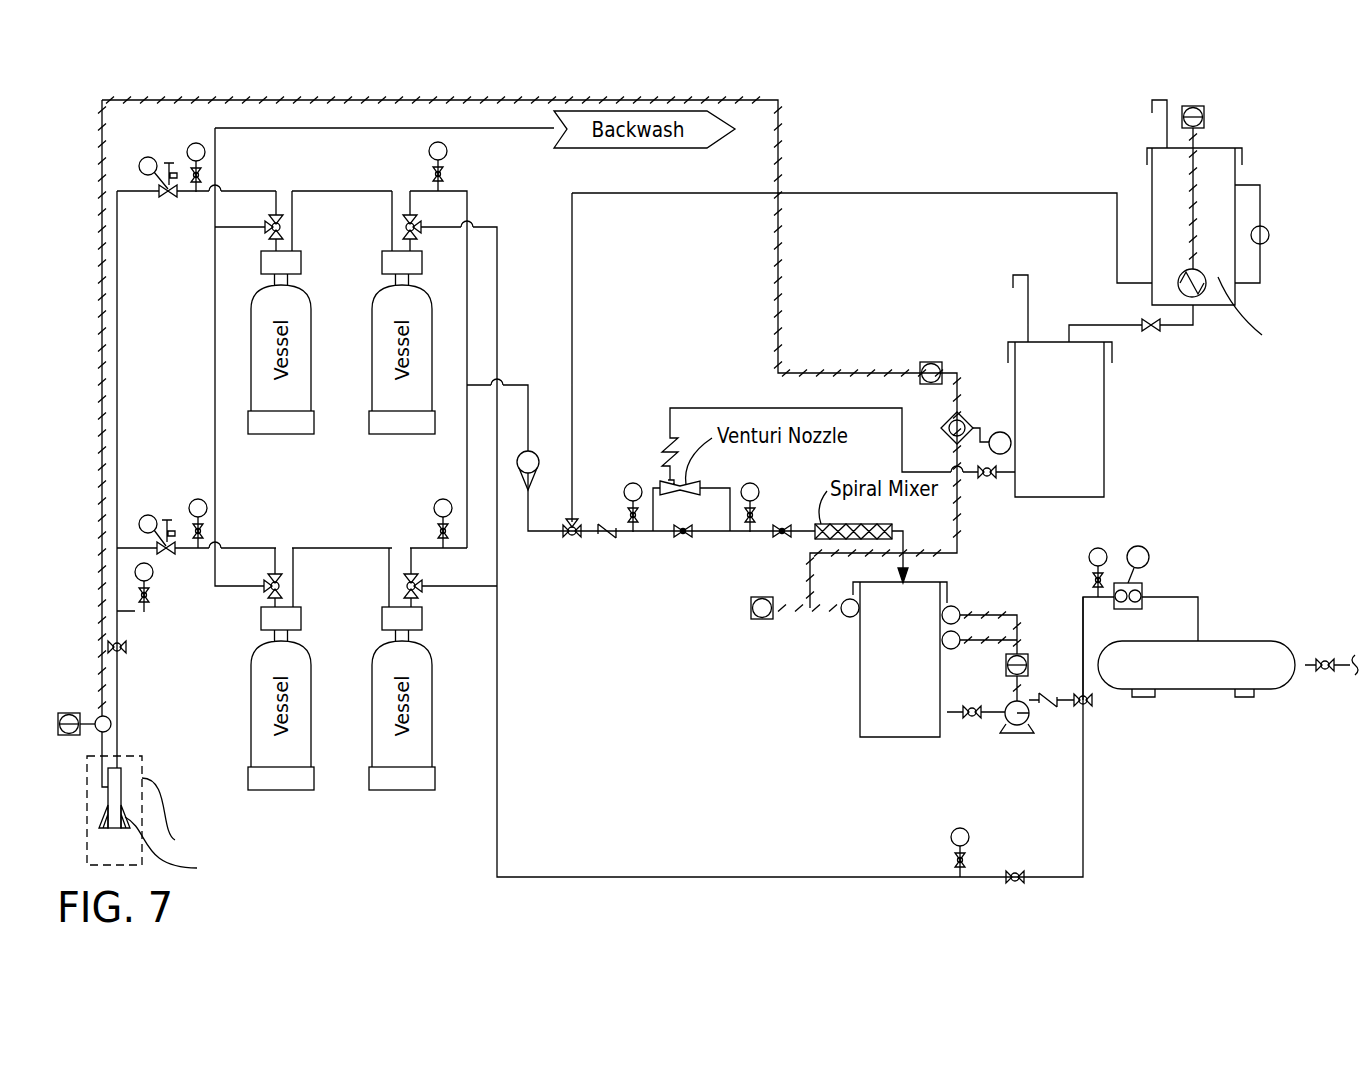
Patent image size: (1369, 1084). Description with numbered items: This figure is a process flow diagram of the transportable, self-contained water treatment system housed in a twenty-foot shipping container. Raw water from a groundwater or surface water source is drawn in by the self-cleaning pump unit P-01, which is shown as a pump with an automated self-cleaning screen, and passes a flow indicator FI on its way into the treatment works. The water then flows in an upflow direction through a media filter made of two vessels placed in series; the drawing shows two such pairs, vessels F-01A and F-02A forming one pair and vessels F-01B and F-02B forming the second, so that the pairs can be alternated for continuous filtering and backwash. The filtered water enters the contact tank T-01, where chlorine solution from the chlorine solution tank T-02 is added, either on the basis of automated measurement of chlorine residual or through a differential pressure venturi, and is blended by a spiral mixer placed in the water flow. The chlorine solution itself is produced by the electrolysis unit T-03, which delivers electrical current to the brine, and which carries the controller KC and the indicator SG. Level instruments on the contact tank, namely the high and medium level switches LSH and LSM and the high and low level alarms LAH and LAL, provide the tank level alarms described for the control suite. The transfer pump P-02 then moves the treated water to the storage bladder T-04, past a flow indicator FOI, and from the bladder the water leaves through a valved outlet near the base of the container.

The flow indicator FI is at (531, 452).
The filter vessel F-01A is at (281, 339).
The filter vessel F-02A is at (402, 339).
The filter vessel F-01B is at (281, 698).
The filter vessel F-02B is at (402, 698).
The level switch medium LSM is at (960, 607).
The level switch high LSH is at (850, 618).
The level alarm low LAL is at (923, 363).
The level alarm high LAH is at (762, 620).
The pump with automated self-cleaning screen P-01 is at (282, 818).
The pump P-02 is at (1017, 731).
The tank T-01 is at (900, 674).
The chlorine solution tank T-02 is at (1060, 436).
The electrolysis unit T-03 is at (1255, 230).
The water bladder T-04 is at (1196, 682).
The controller KC is at (1205, 113).
The sight glass SG is at (1270, 235).
The flow indicator FOI is at (1149, 553).